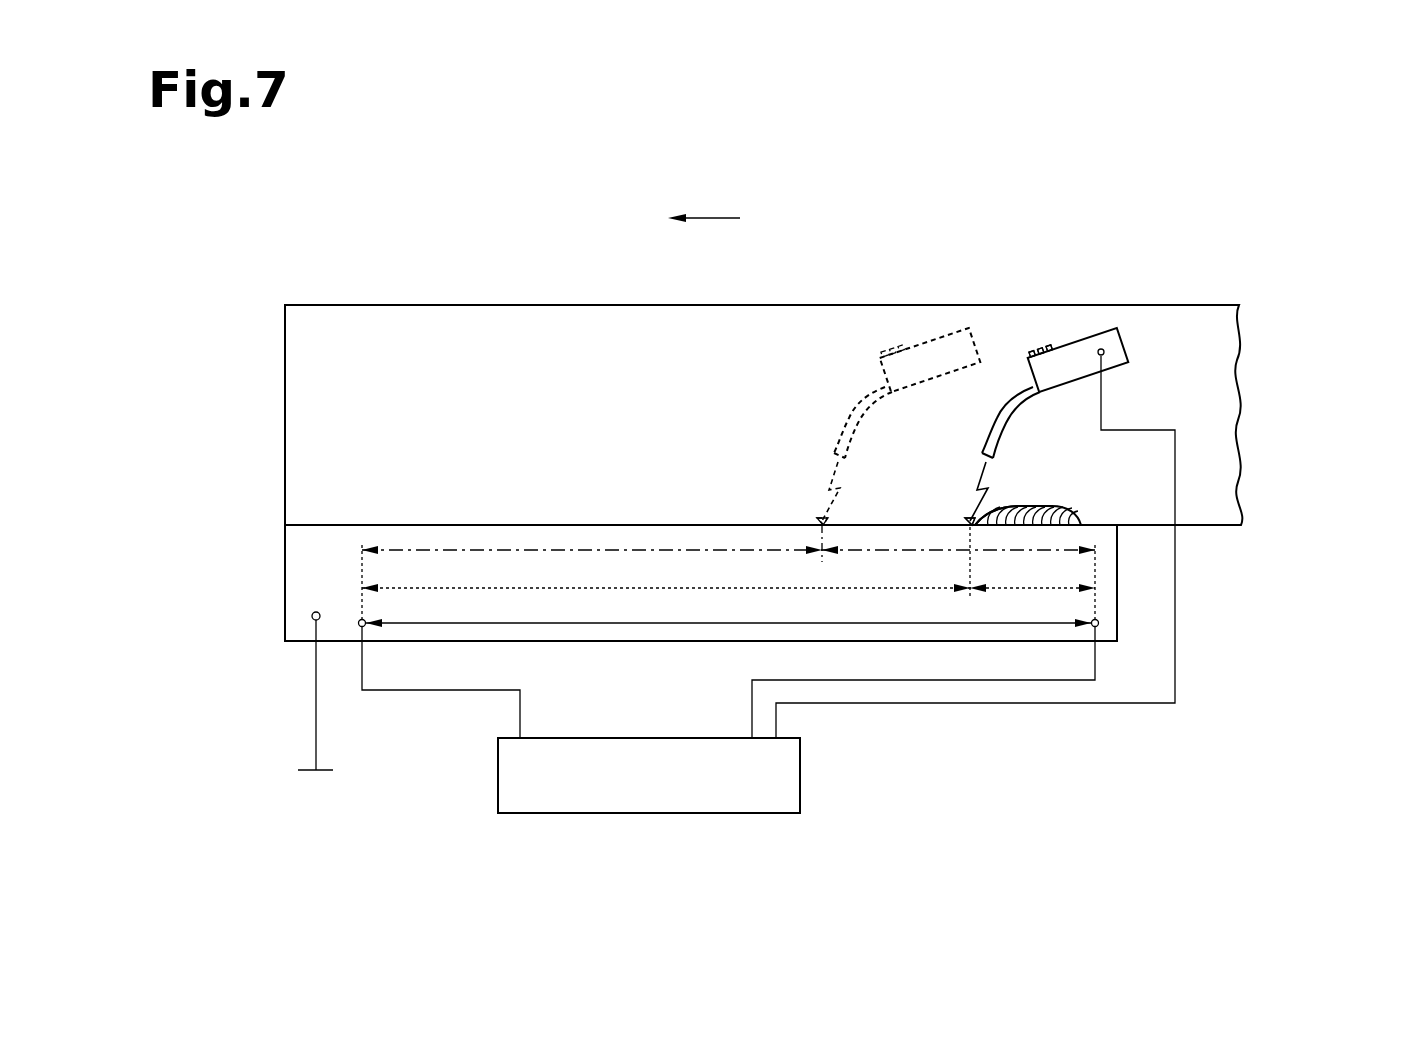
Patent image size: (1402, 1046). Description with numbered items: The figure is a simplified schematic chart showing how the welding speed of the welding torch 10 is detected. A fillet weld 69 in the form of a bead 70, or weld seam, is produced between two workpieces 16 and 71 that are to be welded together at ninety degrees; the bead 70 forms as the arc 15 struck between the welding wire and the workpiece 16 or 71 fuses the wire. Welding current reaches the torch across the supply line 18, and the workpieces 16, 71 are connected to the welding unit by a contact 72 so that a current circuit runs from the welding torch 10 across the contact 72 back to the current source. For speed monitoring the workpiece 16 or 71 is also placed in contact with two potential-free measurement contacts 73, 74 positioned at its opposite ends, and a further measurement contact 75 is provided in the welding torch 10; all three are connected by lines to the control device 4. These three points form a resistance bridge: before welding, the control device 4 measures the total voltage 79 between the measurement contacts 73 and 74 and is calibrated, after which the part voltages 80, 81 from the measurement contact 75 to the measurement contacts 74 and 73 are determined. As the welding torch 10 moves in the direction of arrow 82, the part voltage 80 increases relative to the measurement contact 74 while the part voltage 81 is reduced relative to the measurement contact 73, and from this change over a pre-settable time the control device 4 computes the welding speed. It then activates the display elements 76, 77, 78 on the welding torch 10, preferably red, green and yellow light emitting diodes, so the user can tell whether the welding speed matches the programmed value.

The control device 4 is at (658, 760).
The welding torch 10 is at (933, 360).
The arc 15 is at (804, 485).
The workpiece 16 is at (624, 530).
The supply line 18 is at (306, 748).
The fillet weld 69 is at (1008, 488).
The bead 70 is at (1093, 499).
The workpiece 71 is at (563, 350).
The contact 72 is at (298, 638).
The measurement contact 73 is at (345, 606).
The measurement contact 74 is at (1116, 623).
The measurement contact 75 is at (1123, 330).
The display element 76 is at (1033, 350).
The display element 77 is at (1034, 342).
The display element 78 is at (1050, 342).
The total voltage 79 is at (713, 633).
The part voltage 80 is at (878, 556).
The part voltage 81 is at (479, 538).
The arrow 82 is at (706, 208).